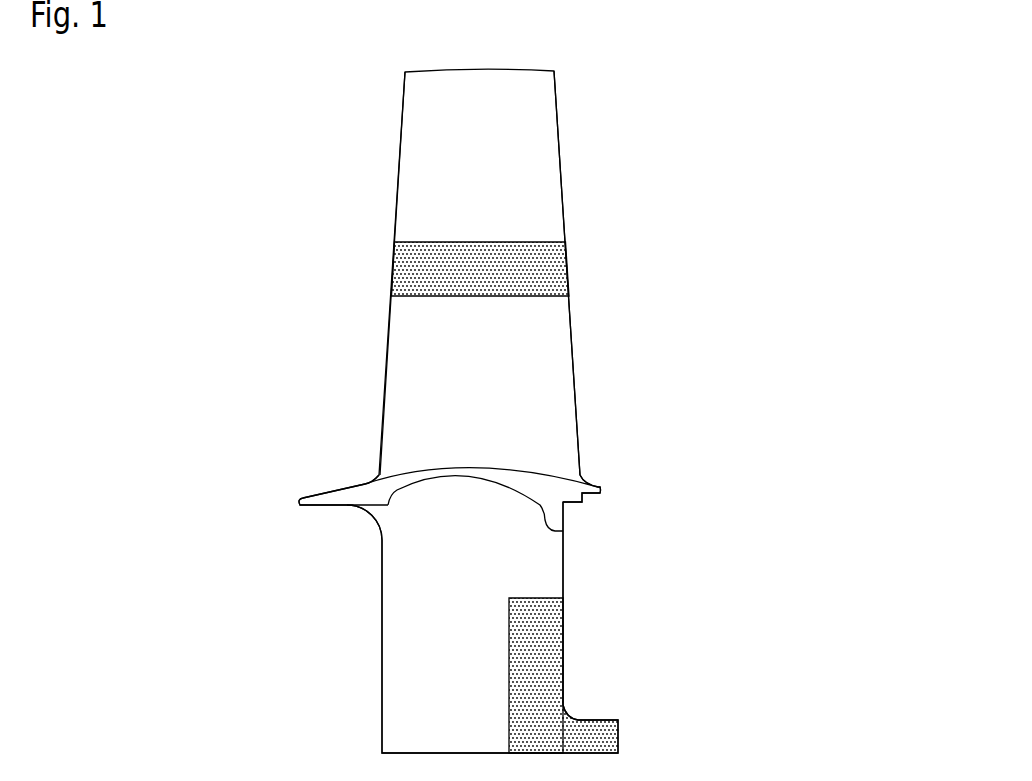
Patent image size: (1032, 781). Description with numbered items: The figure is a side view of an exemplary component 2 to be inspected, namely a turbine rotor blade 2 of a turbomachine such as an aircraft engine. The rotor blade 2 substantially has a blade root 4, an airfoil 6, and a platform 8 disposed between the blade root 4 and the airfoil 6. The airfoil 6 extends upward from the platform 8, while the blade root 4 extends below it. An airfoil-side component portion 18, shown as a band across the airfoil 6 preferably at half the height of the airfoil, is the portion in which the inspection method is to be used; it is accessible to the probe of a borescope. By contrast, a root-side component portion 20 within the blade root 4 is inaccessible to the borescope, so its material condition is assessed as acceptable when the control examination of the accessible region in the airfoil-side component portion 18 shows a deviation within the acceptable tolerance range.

The component 2 is at (258, 68).
The airfoil 6 is at (520, 343).
The airfoil-side component portion 18 is at (535, 265).
The platform 8 is at (553, 490).
The blade root 4 is at (540, 573).
The root-side component portion 20 is at (543, 658).